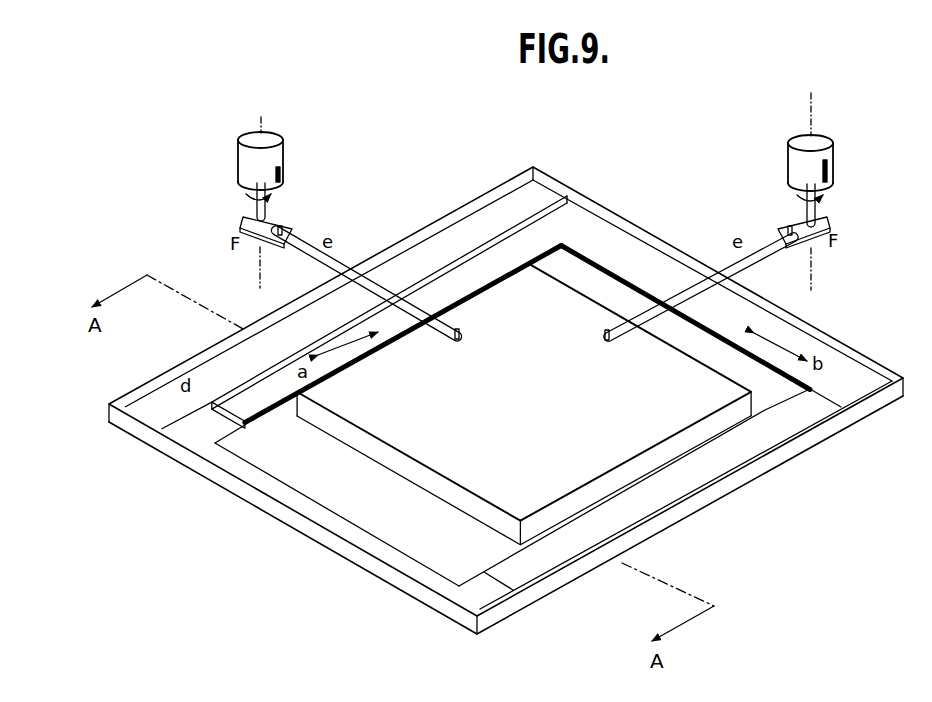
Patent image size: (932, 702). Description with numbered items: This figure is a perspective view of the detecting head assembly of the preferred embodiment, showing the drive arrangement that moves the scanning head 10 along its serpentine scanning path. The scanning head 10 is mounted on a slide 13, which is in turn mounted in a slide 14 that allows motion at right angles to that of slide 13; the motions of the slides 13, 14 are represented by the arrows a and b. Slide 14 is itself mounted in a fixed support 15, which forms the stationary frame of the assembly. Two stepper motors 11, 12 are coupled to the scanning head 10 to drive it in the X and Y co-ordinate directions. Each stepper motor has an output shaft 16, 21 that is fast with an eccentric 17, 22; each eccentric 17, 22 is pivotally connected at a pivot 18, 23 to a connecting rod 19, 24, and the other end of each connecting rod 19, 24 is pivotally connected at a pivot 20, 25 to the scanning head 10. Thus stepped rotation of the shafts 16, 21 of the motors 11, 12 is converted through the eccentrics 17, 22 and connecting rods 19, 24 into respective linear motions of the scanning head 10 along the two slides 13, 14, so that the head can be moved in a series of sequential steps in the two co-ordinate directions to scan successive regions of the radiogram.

The scanning head 10 is at (437, 437).
The stepper motor 11 is at (256, 190).
The stepper motor 12 is at (844, 191).
The slide 13 is at (487, 262).
The slide 14 is at (624, 247).
The fixed support 15 is at (148, 398).
The output shaft 16 is at (254, 214).
The eccentric 17 is at (273, 220).
The pivotal connection 18 is at (287, 229).
The connecting rod 19 is at (338, 259).
The pivotal connection 20 is at (463, 328).
The output shaft 21 is at (835, 222).
The eccentric 22 is at (822, 248).
The pivotal connection 23 is at (789, 232).
The connecting rod 24 is at (722, 270).
The pivotal connection 25 is at (608, 343).